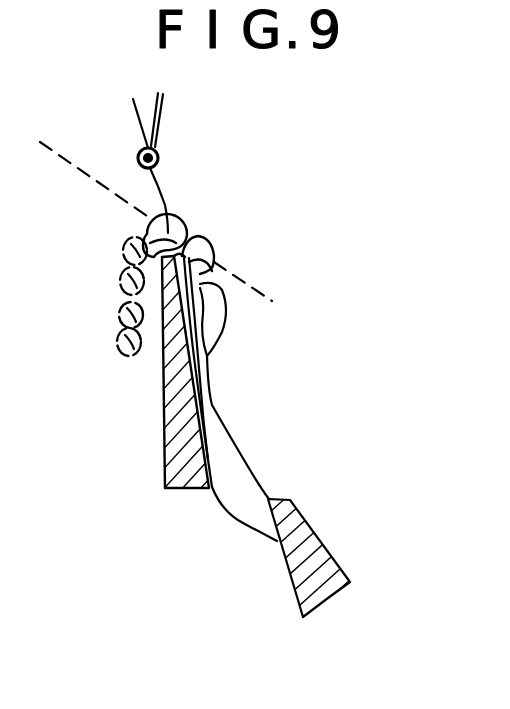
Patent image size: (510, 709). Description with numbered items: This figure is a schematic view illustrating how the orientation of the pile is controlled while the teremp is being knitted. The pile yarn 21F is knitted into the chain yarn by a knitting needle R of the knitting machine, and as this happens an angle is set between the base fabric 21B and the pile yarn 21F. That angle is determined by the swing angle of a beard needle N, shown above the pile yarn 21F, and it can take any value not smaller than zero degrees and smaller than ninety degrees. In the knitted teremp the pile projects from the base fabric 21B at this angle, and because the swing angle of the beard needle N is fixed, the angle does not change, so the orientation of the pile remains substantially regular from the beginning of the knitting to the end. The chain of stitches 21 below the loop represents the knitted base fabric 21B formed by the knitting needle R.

The beard needle N is at (163, 121).
The pile yarn 21F is at (162, 196).
The base fabric 21B is at (225, 241).
The chain of stitches 21 is at (105, 343).
The knitting needle R is at (217, 444).